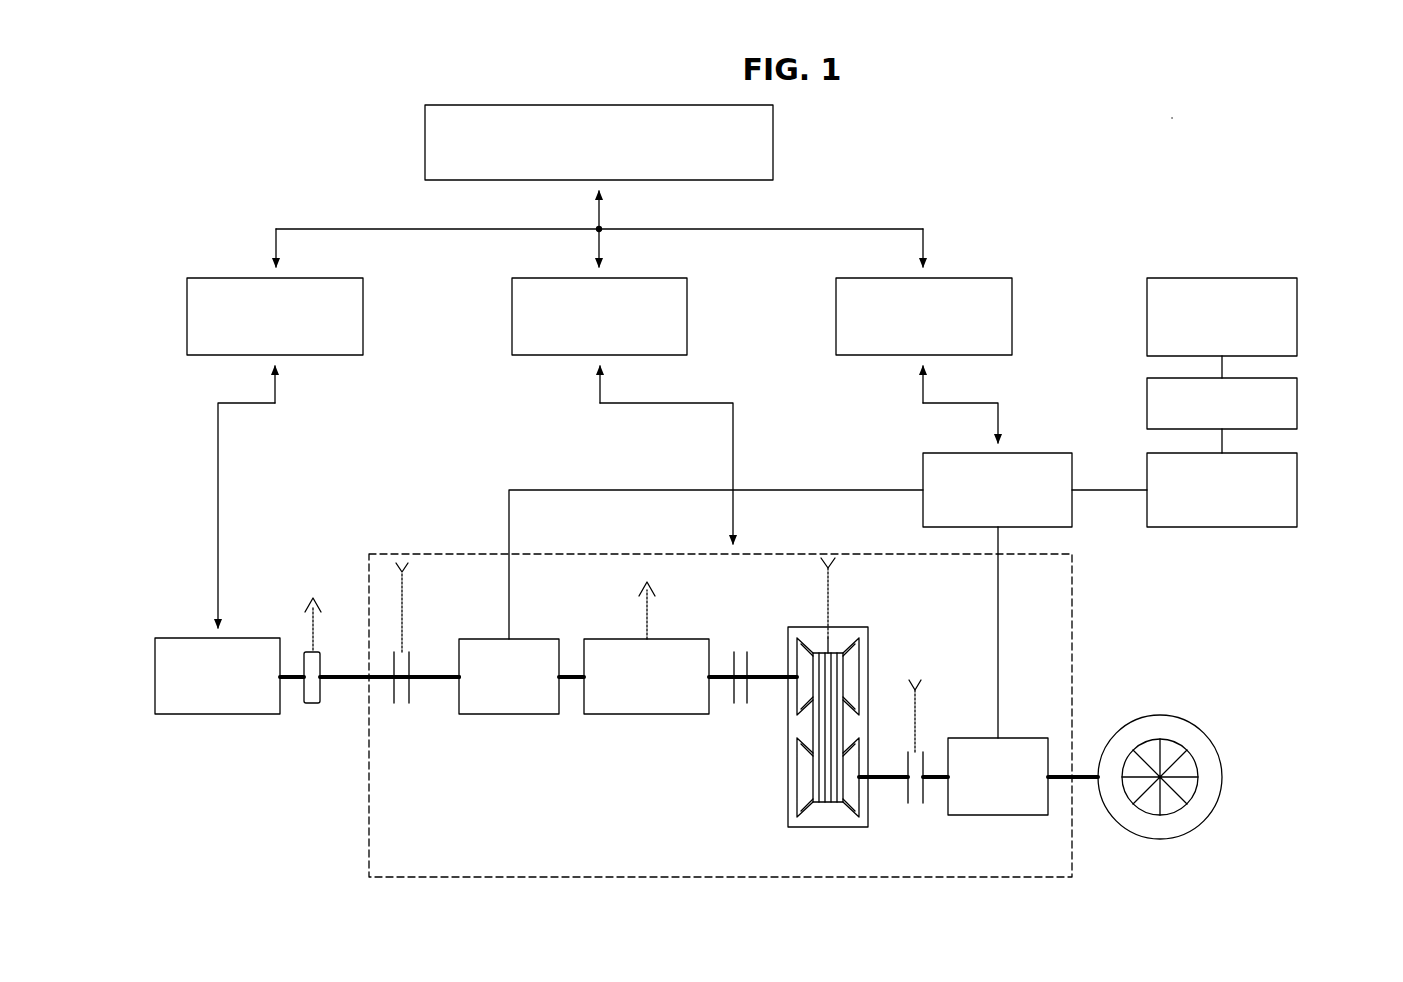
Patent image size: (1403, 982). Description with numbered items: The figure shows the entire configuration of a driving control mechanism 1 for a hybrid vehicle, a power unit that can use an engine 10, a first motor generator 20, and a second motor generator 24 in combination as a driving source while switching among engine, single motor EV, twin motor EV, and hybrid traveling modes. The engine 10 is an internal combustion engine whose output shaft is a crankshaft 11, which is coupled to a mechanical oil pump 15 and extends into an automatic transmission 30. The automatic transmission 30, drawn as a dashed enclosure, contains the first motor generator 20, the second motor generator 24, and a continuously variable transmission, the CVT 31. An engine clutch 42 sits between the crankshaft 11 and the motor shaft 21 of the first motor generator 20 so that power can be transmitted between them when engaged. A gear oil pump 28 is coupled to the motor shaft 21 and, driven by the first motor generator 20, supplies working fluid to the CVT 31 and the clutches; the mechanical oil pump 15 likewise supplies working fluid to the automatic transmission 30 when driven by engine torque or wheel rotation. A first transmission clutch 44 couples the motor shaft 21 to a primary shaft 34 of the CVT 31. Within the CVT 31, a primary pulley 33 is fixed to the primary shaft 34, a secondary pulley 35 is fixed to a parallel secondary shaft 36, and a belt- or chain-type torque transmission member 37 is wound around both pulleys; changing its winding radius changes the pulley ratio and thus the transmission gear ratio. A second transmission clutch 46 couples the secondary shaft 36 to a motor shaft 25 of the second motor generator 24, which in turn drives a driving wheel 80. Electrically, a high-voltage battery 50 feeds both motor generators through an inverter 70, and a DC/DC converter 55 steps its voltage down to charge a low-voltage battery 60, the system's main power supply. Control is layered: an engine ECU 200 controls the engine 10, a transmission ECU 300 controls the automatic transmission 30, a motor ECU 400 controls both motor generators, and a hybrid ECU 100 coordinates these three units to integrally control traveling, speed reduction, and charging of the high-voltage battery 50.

The driving control mechanism 1 is at (1176, 112).
The engine 10 is at (256, 636).
The crankshaft 11 is at (345, 682).
The mechanical oil pump 15 is at (313, 704).
The first motor generator 20 is at (534, 636).
The motor shaft 21 is at (432, 676).
The second motor generator 24 is at (1023, 736).
The motor shaft 25 is at (934, 773).
The gear oil pump 28 is at (688, 636).
The automatic transmission 30 is at (1074, 602).
The continuously variable transmission (CVT) 31 is at (828, 703).
The primary pulley 33 is at (862, 652).
The primary shaft 34 is at (776, 682).
The secondary pulley 35 is at (789, 779).
The secondary shaft 36 is at (886, 773).
The torque transmission member 37 is at (824, 652).
The engine clutch 42 is at (405, 714).
The first transmission clutch 44 is at (742, 648).
The second transmission clutch 46 is at (919, 808).
The high-voltage battery 50 is at (1298, 486).
The DC/DC converter 55 is at (1298, 400).
The low-voltage battery 60 is at (1298, 313).
The inverter 70 is at (1010, 452).
The driving wheel 80 is at (1160, 708).
The hybrid ECU 100 is at (774, 140).
The engine ECU 200 is at (298, 277).
The transmission ECU 300 is at (622, 277).
The motor ECU 400 is at (946, 277).